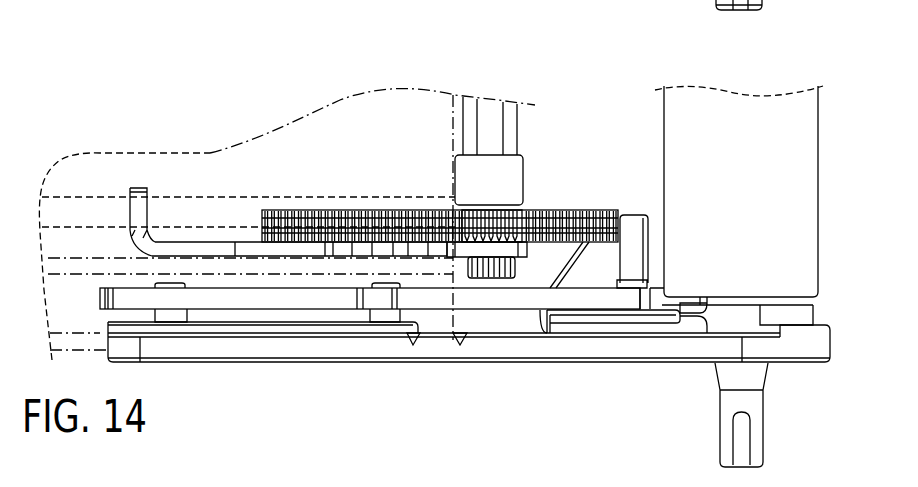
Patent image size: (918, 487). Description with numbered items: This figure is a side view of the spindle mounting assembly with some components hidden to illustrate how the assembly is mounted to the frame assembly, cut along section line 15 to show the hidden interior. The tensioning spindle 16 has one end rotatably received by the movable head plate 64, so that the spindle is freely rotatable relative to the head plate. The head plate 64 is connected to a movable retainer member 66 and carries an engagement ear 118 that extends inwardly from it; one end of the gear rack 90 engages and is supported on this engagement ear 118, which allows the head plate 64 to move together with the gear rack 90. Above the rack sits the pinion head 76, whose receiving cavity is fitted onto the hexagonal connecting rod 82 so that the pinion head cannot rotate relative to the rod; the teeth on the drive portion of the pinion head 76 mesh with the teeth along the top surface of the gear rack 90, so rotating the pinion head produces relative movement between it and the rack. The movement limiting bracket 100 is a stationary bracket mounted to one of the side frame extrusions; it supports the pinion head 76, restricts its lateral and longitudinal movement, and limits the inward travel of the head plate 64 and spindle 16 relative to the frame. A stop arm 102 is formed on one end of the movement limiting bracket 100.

The section line 15- 15 is at (423, 78).
The tensioning spindle 16 is at (805, 188).
The movable head plate 64 is at (577, 350).
The movable retainer member 66 is at (267, 303).
The pinion head 76 is at (525, 180).
The connecting rod 82 is at (492, 113).
The gear rack 90 is at (560, 212).
The movement limiting bracket 100 is at (208, 250).
The stop arm 102 is at (135, 212).
The engagement ear 118 is at (632, 238).